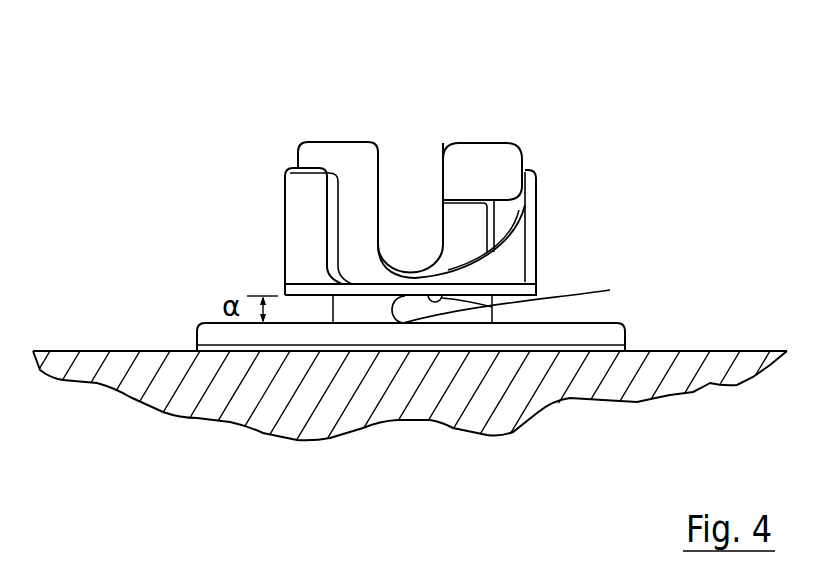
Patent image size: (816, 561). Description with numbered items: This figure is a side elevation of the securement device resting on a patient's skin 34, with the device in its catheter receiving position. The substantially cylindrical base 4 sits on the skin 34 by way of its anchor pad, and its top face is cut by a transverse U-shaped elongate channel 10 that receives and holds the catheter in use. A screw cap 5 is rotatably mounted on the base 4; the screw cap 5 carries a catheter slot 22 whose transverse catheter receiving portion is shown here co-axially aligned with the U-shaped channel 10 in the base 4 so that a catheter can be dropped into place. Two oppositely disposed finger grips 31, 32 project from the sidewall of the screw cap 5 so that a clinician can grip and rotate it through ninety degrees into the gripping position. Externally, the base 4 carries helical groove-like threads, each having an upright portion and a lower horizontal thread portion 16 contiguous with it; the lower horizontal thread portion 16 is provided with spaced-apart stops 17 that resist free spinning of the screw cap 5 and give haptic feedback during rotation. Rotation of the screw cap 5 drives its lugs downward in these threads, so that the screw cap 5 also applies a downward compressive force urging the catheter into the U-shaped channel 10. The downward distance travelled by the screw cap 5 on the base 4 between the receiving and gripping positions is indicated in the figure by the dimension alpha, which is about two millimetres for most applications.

The U-shaped elongate channel 10 is at (400, 155).
The catheter slot 22 is at (438, 121).
The screw cap 5 is at (507, 143).
The finger grip 31 is at (298, 195).
The finger grip 32 is at (533, 200).
The stops 17 is at (521, 296).
The lower horizontal thread portion 16 is at (403, 312).
The base 4 is at (347, 312).
The patient's skin 34 is at (320, 428).